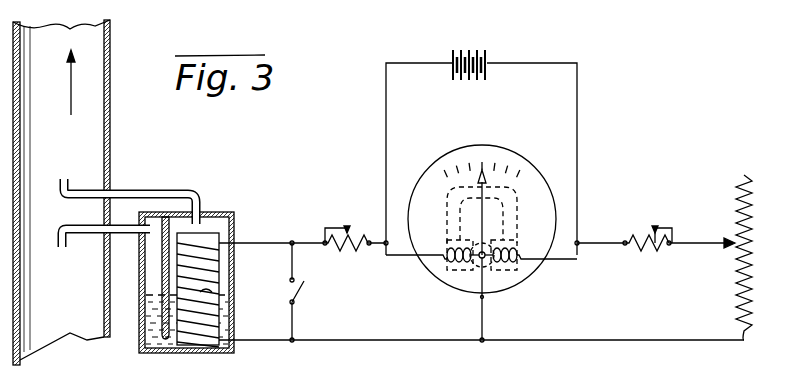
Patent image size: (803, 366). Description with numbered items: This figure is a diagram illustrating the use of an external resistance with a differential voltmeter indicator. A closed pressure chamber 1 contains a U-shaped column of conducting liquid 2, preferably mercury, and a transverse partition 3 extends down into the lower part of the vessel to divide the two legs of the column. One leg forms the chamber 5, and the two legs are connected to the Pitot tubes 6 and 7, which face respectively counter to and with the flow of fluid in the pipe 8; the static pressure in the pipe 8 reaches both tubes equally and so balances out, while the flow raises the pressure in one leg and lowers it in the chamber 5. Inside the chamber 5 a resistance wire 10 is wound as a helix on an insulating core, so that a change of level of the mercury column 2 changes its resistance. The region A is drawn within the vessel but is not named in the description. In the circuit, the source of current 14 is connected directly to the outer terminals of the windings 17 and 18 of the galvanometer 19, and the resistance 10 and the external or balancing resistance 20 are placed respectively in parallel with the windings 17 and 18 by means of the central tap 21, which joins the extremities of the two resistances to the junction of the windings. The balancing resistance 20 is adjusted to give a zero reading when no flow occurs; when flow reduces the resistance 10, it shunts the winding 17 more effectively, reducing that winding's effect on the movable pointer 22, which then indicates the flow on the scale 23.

The closed pressure chamber 1 is at (212, 212).
The U-shaped column of conducting liquid 2 is at (156, 308).
The transverse partition 3 is at (165, 278).
The chamber 5 is at (222, 267).
The Pitot tube 6 is at (62, 249).
The Pitot tube 7 is at (68, 178).
The pipe 8 is at (67, 130).
The resistance wire 10 is at (206, 289).
The source of current 14 is at (468, 50).
The winding 17 is at (459, 263).
The winding 18 is at (513, 263).
The galvanometer 19 is at (532, 222).
The external or balancing resistance 20 is at (735, 207).
The central tap 21 is at (482, 298).
The movable pointer 22 is at (480, 208).
The scale 23 is at (512, 172).
The chamber A is at (152, 262).